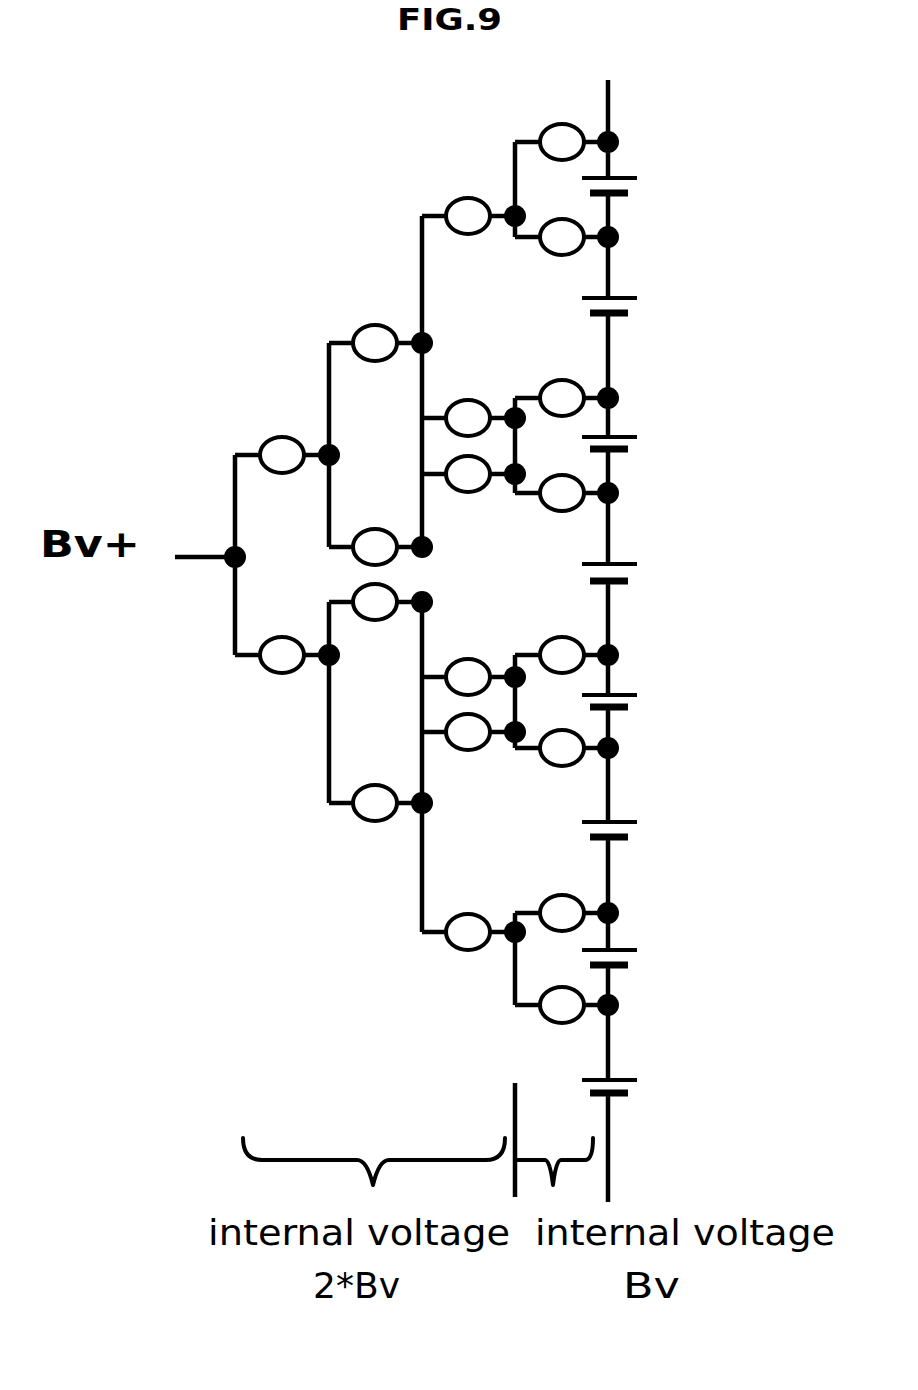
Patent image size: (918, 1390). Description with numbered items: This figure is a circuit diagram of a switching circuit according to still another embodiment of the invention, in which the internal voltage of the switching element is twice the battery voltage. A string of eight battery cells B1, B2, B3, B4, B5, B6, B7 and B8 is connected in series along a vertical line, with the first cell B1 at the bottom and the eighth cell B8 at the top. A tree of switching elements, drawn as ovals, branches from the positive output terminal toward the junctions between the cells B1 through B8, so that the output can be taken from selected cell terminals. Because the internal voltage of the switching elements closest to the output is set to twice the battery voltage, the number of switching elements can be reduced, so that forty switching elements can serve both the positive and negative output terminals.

The battery cell B1 is at (645, 1080).
The battery cell B2 is at (645, 957).
The battery cell B3 is at (645, 820).
The battery cell B4 is at (645, 699).
The battery cell B5 is at (645, 560).
The battery cell B6 is at (645, 441).
The battery cell B7 is at (645, 304).
The battery cell B8 is at (645, 183).